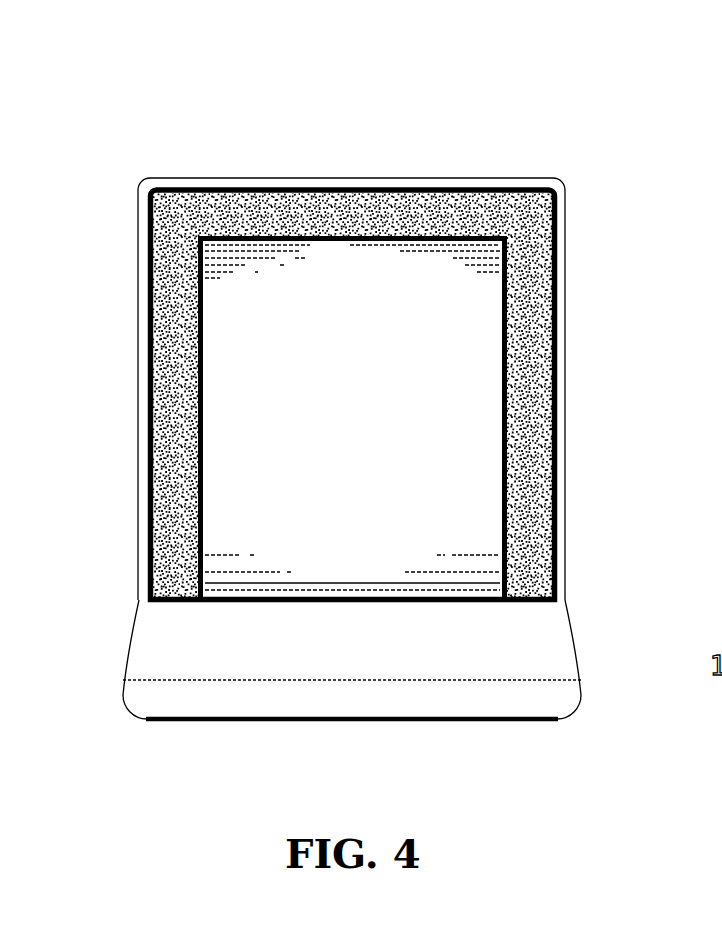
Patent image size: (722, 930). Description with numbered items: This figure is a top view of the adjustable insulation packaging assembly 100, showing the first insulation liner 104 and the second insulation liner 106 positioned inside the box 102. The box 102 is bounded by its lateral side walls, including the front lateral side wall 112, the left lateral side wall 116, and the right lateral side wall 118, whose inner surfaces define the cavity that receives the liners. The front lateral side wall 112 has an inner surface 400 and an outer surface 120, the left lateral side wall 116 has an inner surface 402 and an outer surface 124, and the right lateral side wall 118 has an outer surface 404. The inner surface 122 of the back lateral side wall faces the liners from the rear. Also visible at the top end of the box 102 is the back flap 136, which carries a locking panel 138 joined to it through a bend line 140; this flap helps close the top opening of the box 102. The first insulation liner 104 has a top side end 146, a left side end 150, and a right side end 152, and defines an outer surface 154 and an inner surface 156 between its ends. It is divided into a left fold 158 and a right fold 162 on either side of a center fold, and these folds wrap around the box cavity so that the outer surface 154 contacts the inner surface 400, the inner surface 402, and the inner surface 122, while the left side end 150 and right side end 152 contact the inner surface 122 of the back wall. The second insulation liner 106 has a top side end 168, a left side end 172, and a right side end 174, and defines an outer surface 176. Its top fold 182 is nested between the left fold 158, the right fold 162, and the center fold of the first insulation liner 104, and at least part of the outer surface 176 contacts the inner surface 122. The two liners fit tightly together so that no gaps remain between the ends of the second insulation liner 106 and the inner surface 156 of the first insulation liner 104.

The adjustable insulation packaging assembly 100 is at (126, 141).
The box 102 is at (563, 177).
The first insulation liner 104 is at (527, 555).
The second insulation liner 106 is at (387, 578).
The front lateral side wall 112 is at (517, 177).
The left lateral side wall 116 is at (558, 300).
The right lateral side wall 118 is at (143, 383).
The outer surface 120 is at (277, 170).
The inner surface 122 is at (477, 603).
The outer surface 124 is at (567, 327).
The back flap 136 is at (145, 628).
The locking panel 138 is at (198, 703).
The bend line 140 is at (507, 693).
The top side end 146 is at (165, 548).
The left side end 150 is at (525, 603).
The right side end 152 is at (174, 603).
The outer surface 154 is at (560, 193).
The inner surface 156 is at (503, 445).
The left fold 158 is at (160, 410).
The right fold 162 is at (547, 483).
The top side end 168 is at (282, 235).
The left side end 172 is at (533, 517).
The right side end 174 is at (165, 488).
The outer surface 176 is at (420, 413).
The top fold 182 is at (320, 437).
The inner surface 400 is at (475, 212).
The inner surface 402 is at (513, 243).
The outer surface 404 is at (134, 300).